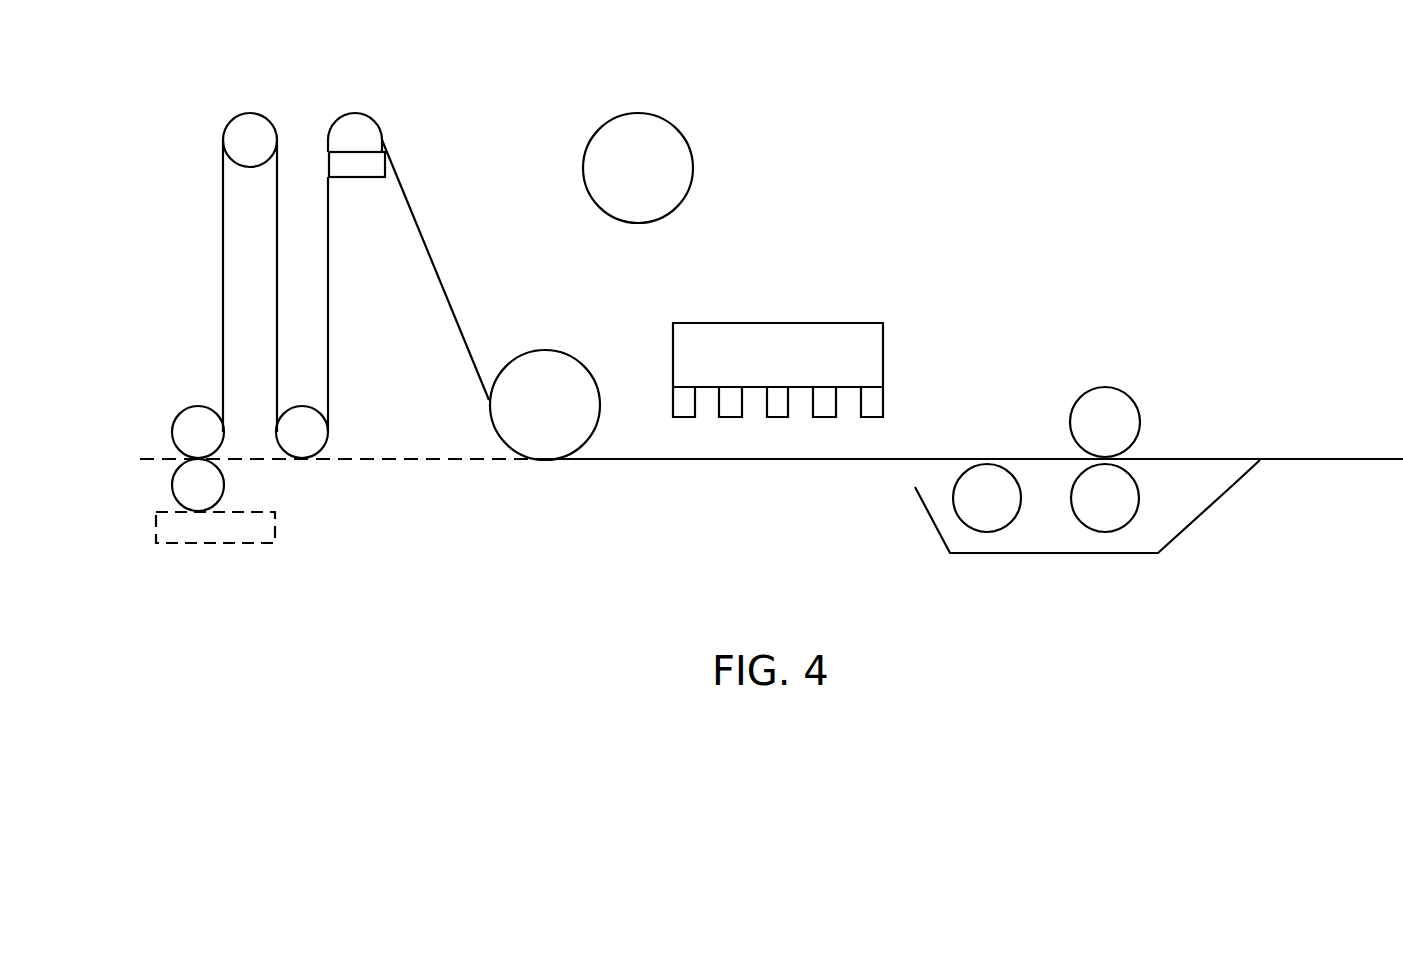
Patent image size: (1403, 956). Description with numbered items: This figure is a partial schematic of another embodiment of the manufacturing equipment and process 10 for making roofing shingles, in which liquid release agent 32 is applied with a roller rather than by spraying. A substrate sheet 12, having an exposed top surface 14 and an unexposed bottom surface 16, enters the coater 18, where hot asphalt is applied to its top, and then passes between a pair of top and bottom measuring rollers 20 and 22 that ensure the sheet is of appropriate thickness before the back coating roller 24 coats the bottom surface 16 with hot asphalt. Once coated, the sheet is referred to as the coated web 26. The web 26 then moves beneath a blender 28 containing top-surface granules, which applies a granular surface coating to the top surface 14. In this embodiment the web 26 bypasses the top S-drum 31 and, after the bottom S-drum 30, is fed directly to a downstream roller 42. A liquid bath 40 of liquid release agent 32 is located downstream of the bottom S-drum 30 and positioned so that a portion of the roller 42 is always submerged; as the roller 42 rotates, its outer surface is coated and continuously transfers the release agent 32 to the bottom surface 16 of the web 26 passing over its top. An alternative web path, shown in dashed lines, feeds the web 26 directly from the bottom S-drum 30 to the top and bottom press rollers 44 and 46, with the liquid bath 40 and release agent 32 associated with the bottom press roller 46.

The manufacturing equipment and process 10 is at (1262, 152).
The substrate sheet 12 is at (1361, 432).
The top surface 14 is at (1290, 458).
The bottom surface 16 is at (1268, 460).
The coater 18 is at (1152, 559).
The top measuring roller 20 is at (1105, 387).
The bottom measuring roller 22 is at (1105, 532).
The back coating roller 24 is at (987, 532).
The coated web 26 is at (735, 463).
The blender 28 is at (792, 318).
The bottom S-drum 30 is at (588, 370).
The top S-drum 31 is at (693, 163).
The liquid release agent 32 is at (385, 163).
The liquid bath 40 is at (352, 185).
The roller 42 is at (352, 113).
The top press roller 44 is at (200, 405).
The bottom press roller 46 is at (172, 487).